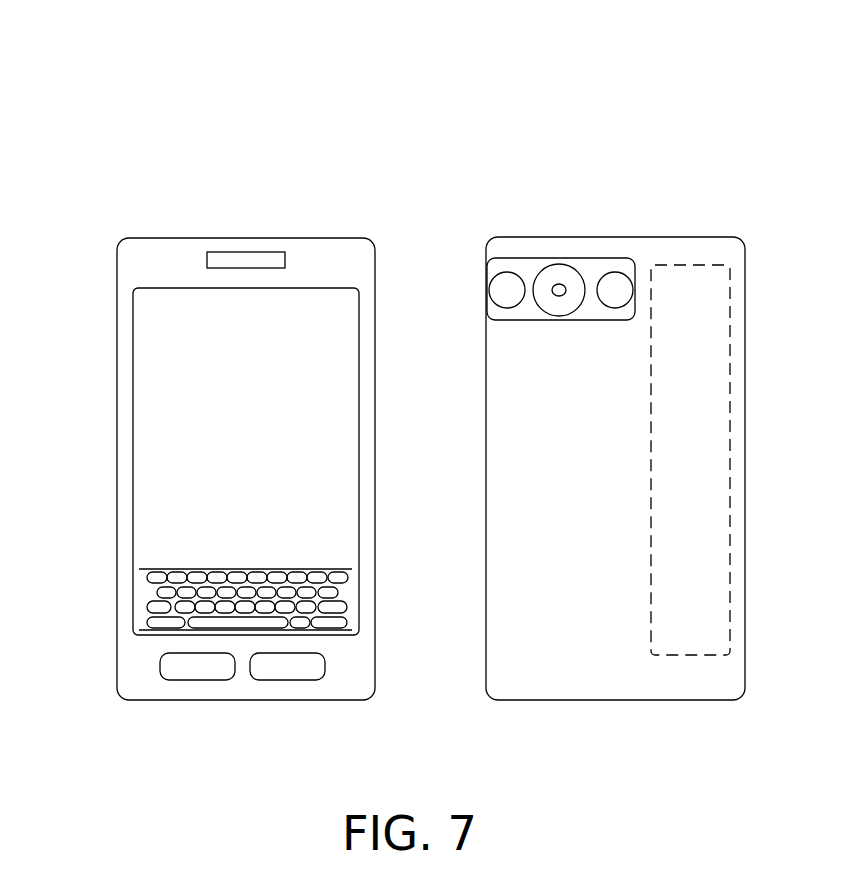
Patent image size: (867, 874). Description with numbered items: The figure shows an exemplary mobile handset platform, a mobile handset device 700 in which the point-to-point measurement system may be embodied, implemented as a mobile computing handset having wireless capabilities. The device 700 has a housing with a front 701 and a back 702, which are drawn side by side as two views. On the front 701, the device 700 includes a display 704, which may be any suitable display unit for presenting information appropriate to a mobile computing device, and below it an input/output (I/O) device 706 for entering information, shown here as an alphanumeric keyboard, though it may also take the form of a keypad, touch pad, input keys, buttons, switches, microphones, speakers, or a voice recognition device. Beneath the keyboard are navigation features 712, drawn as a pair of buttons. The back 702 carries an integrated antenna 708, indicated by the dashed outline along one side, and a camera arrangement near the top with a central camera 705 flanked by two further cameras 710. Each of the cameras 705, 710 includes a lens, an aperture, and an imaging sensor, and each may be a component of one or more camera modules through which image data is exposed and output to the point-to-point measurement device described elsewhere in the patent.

The mobile handset device 700 is at (119, 92).
The front 701 is at (222, 231).
The back 702 is at (536, 229).
The display 704 is at (265, 475).
The camera 705 is at (557, 265).
The input/output (I/O) device 706 is at (142, 594).
The integrated antenna 708 is at (710, 472).
The cameras 710 is at (605, 278).
The navigation features 712 is at (177, 668).